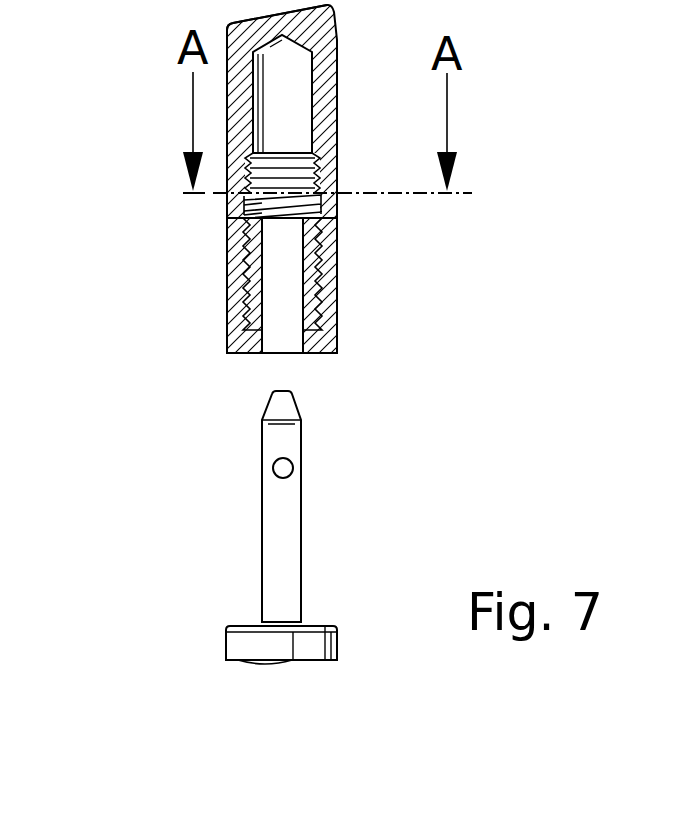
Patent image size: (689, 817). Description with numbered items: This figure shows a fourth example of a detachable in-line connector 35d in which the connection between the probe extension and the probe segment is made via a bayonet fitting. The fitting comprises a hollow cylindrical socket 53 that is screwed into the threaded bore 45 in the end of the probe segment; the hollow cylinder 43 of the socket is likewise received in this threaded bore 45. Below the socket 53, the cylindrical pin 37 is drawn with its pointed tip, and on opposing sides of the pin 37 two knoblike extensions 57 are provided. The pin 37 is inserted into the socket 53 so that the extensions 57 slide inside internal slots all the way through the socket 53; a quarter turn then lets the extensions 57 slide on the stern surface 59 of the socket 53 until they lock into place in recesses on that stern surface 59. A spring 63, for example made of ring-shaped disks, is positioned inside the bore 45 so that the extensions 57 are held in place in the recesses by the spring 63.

The detachable in-line connector 35d is at (168, 120).
The pin 37 is at (275, 518).
The hollow cylinder 43 is at (313, 269).
The threaded bore 45 is at (318, 198).
The hollow cylindrical socket 53 is at (218, 287).
The knoblike extensions 57 is at (283, 470).
The stern surface 59 is at (248, 206).
The spring 63 is at (318, 172).